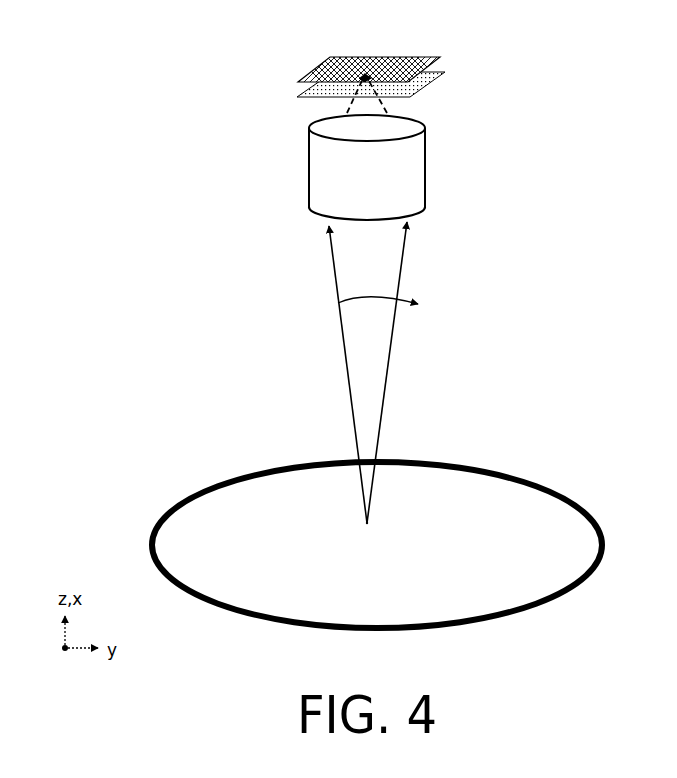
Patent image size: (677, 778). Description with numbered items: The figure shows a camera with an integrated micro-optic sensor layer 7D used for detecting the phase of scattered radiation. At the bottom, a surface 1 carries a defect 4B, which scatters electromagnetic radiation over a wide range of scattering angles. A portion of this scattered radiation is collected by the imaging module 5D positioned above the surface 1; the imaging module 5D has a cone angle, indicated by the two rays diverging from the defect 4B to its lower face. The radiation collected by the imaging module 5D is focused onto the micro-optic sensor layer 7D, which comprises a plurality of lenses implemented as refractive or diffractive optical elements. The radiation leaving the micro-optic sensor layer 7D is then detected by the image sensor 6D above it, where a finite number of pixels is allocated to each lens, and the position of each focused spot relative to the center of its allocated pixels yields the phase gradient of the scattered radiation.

The surface 1 is at (553, 597).
The defect 4B is at (367, 524).
The imaging module 5D is at (426, 158).
The image sensor 6D is at (437, 62).
The micro-optic sensor layer 7D is at (420, 92).